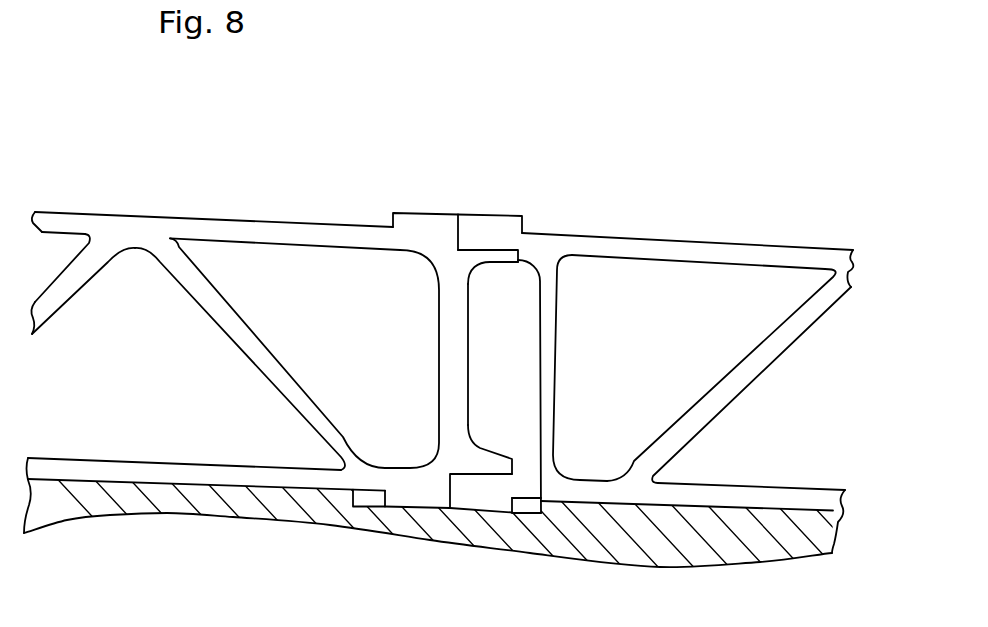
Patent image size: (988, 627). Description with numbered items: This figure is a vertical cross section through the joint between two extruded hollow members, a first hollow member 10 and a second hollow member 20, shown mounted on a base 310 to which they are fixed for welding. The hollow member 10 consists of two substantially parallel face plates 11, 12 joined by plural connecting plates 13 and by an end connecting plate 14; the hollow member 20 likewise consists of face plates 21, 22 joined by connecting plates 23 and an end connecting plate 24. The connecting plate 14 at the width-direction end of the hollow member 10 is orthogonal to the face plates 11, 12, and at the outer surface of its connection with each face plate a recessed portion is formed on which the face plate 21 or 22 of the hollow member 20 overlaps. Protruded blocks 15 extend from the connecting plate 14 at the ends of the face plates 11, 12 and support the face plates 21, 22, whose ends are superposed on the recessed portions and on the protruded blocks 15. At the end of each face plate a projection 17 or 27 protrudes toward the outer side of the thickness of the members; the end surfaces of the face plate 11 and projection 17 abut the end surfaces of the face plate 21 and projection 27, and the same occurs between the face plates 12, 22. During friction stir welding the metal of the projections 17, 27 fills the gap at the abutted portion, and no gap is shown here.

The hollow member 10 is at (213, 172).
The face plate 11 is at (263, 224).
The face plate 12 is at (123, 472).
The connecting plate 13 is at (47, 307).
The connecting plate 14 is at (447, 352).
The protruded block 15 is at (487, 263).
The projection 17 is at (418, 228).
The hollow member 20 is at (711, 192).
The face plate 21 is at (673, 241).
The face plate 22 is at (747, 495).
The connecting plate 23 is at (753, 370).
The connecting plate 24 is at (566, 384).
The projection 27 is at (498, 228).
The base 310 is at (620, 548).